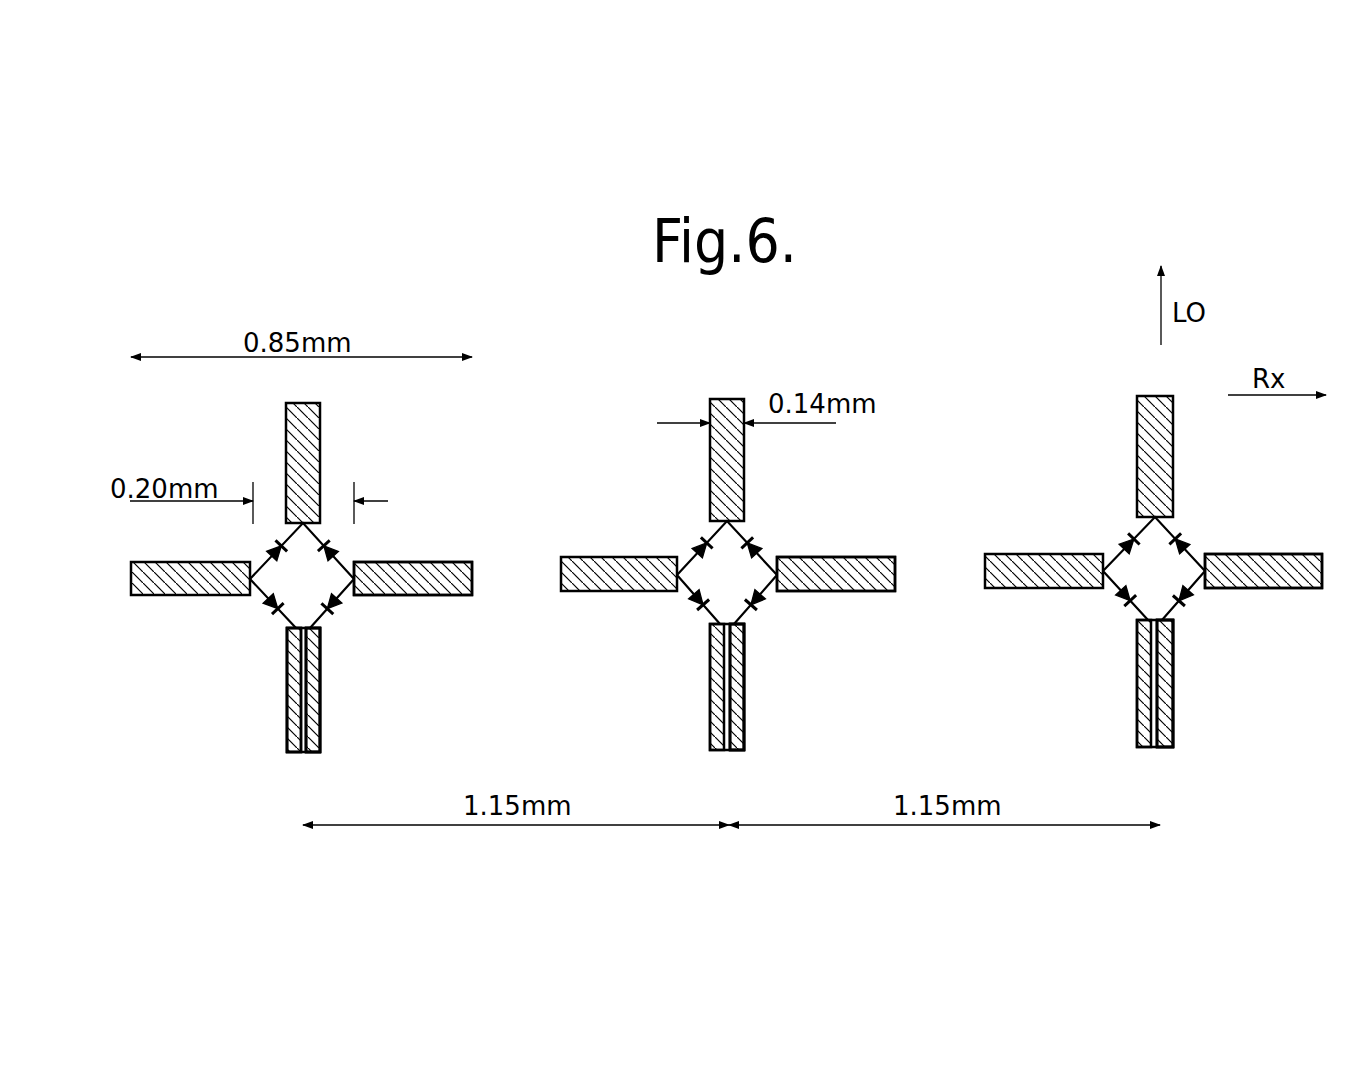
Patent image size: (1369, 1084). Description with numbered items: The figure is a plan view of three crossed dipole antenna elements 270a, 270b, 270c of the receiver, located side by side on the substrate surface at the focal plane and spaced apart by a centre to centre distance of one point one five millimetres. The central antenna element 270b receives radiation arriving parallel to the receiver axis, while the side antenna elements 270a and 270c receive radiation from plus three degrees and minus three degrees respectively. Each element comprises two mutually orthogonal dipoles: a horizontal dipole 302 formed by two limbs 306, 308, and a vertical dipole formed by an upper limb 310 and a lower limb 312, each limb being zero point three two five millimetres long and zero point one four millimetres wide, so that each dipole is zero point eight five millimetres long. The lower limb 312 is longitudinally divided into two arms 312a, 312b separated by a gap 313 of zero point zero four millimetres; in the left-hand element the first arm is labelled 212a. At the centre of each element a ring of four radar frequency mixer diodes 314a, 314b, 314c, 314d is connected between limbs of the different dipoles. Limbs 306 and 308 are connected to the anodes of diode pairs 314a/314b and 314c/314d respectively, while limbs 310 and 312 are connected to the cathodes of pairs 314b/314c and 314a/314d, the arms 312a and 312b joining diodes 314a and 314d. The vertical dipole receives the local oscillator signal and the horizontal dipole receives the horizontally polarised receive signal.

The limb 310 is at (320, 440).
The limb 306 is at (190, 596).
The limb 308 is at (460, 562).
The dipole 302 is at (455, 596).
The limb 312 is at (322, 690).
The arm 312a is at (710, 720).
The IF output conductor (first) 212a is at (287, 699).
The arm 312b is at (322, 717).
The antenna element 270a is at (322, 745).
The antenna element 270b is at (746, 746).
The antenna element 270c is at (1175, 740).
The gap 313 is at (290, 735).
The mixer diode 314a is at (266, 608).
The mixer diode 314b is at (232, 542).
The mixer diode 314c is at (336, 548).
The mixer diode 314d is at (338, 609).